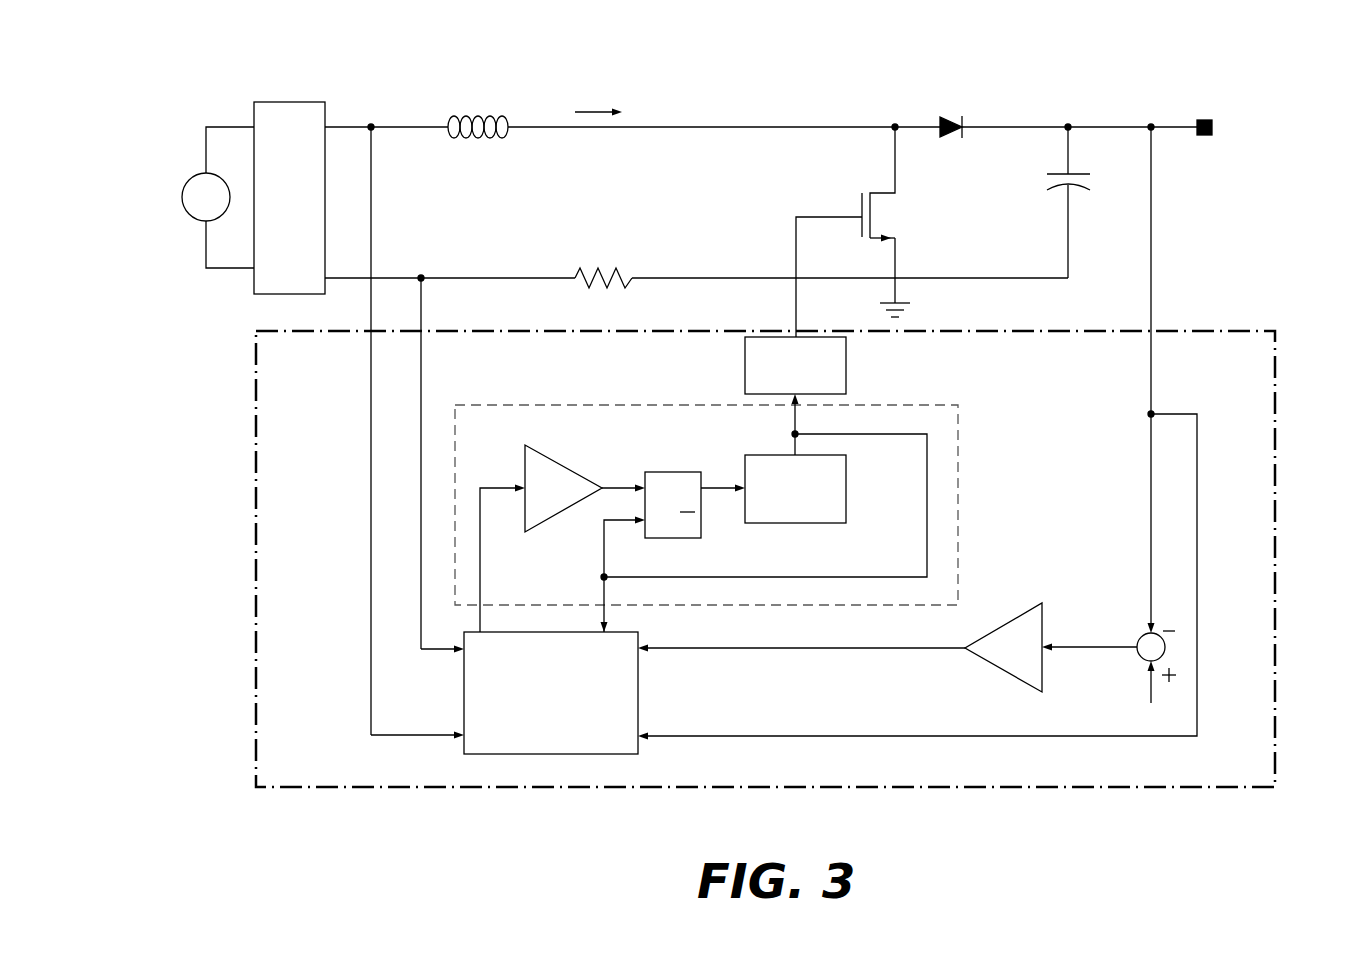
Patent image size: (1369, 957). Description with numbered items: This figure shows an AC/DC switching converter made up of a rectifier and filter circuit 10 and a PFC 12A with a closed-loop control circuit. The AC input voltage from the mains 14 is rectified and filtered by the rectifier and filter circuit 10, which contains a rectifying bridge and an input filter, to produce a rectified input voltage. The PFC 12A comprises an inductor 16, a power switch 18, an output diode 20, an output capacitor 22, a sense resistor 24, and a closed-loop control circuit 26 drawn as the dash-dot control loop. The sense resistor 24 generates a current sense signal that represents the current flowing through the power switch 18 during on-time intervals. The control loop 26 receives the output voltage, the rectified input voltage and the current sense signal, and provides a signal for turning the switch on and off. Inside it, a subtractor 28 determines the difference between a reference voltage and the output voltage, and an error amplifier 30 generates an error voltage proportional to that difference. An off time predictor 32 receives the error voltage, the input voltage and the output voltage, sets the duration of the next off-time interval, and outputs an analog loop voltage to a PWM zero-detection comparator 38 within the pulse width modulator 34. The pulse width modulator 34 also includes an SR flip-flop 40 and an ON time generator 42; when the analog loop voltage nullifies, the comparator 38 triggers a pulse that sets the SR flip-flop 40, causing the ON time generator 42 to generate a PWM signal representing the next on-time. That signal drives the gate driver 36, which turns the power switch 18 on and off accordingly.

The rectifier and filter circuit 10 is at (290, 102).
The PFC 12A is at (1066, 76).
The mains 14 is at (182, 194).
The inductor 16 is at (475, 112).
The power switch 18 is at (886, 193).
The output diode 20 is at (953, 114).
The output capacitor 22 is at (1055, 173).
The sense resistor 24 is at (628, 272).
The closed-loop control circuit 26 is at (1276, 471).
The subtractor 28 is at (1141, 634).
The error amplifier 30 is at (1000, 622).
The off time predictor 32 is at (638, 690).
The pulse width modulator 34 is at (636, 404).
The gate driver 36 is at (846, 363).
The PWM zero-detection comparator 38 is at (565, 468).
The SR flip-flop 40 is at (672, 471).
The ON time generator 42 is at (767, 454).